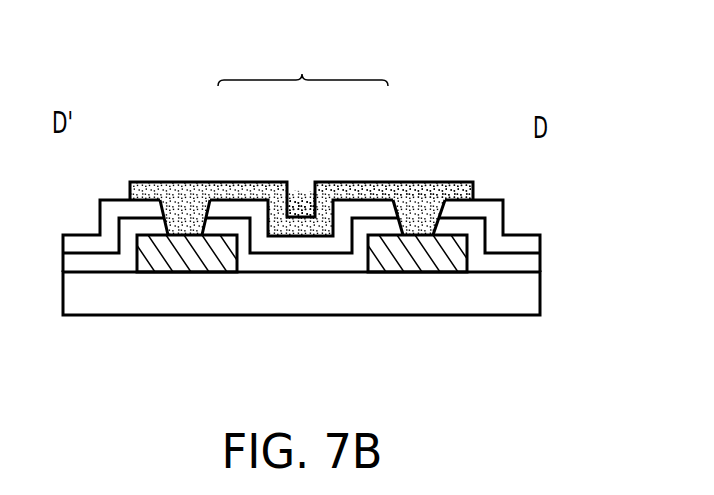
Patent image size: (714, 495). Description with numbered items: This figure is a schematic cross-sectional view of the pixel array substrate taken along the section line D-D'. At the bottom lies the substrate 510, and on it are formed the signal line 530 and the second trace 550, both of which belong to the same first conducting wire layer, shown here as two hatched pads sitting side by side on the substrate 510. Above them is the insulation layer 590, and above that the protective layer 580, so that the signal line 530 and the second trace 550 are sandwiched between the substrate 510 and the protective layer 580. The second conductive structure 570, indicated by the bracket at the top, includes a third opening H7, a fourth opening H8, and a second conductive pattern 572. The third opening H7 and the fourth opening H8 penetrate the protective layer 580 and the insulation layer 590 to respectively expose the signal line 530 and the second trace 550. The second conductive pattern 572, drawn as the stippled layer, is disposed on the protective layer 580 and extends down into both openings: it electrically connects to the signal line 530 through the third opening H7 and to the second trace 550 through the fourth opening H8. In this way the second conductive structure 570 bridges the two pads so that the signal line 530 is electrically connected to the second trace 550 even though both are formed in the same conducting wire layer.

The substrate 510 is at (525, 295).
The insulation layer 590 is at (525, 265).
The protective layer 580 is at (525, 245).
The second trace 550 is at (182, 255).
The signal line 530 is at (426, 255).
The second conductive pattern 572 is at (343, 185).
The second conductive structure 570 is at (303, 62).
The fourth opening H8 is at (184, 216).
The third opening H7 is at (417, 216).